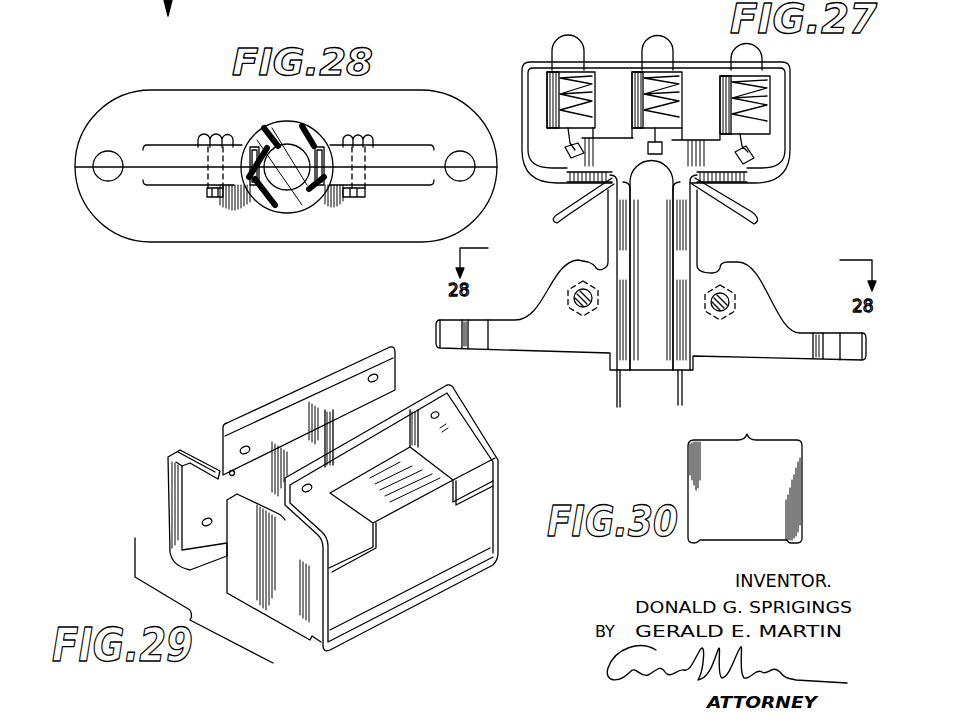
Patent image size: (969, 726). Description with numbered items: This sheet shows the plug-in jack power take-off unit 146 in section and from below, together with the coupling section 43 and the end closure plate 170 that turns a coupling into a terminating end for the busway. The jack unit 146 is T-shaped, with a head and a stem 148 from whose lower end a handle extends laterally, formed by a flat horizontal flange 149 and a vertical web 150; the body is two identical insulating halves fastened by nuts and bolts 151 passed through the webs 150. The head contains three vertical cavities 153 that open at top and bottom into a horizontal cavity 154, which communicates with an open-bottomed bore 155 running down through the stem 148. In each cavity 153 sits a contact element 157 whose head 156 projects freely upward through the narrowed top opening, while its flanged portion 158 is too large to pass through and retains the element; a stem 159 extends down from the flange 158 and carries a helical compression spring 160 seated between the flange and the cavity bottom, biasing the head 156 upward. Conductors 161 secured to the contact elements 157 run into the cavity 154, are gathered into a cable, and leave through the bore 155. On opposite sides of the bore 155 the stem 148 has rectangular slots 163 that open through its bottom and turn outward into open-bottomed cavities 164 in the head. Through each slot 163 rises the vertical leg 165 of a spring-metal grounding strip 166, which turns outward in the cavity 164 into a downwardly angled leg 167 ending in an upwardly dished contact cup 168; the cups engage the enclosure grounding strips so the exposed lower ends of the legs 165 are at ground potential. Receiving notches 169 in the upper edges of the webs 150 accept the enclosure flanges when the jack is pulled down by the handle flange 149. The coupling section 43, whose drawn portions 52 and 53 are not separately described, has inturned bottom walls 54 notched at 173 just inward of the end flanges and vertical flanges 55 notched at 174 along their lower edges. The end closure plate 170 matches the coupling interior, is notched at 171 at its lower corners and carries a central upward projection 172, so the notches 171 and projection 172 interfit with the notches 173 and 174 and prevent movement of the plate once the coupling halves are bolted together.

In FIG. 29, the enclosure coupling section 43 is at (245, 412).
In FIG. 29, the channel frame 52 is at (355, 607).
In FIG. 29, the shelf 53 is at (467, 453).
In FIG. 29, the inturned bottom walls 54 is at (213, 557).
In FIG. 29, the vertical flanges 55 is at (390, 372).
In FIG. 27, the plug-in jack unit 146 is at (840, 163).
In FIG. 28, the stem 148 is at (277, 200).
In FIG. 27, the stem 148 is at (693, 232).
In FIG. 28, the horizontal flange 149 is at (413, 113).
In FIG. 27, the horizontal flange 149 is at (773, 352).
In FIG. 28, the vertical web 150 is at (172, 157).
In FIG. 27, the vertical web 150 is at (750, 306).
In FIG. 28, the nuts and bolts 151 is at (210, 190).
In FIG. 27, the nuts and bolts 151 is at (580, 298).
In FIG. 27, the vertically extending cavities 153 is at (586, 96).
In FIG. 27, the horizontally extending cavity 154 is at (563, 155).
In FIG. 28, the bore 155 is at (278, 155).
In FIG. 27, the bore 155 is at (645, 362).
In FIG. 27, the heads 156 is at (653, 50).
In FIG. 27, the electrical contact elements 157 is at (806, 62).
In FIG. 27, the flanged portions 158 is at (552, 52).
In FIG. 27, the stems 159 is at (657, 93).
In FIG. 27, the helical compression springs 160 is at (753, 115).
In FIG. 27, the electrical conductors 161 is at (650, 150).
In FIG. 28, the rectangular slots 163 is at (254, 143).
In FIG. 27, the rectangular slots 163 is at (677, 250).
In FIG. 27, the open bottomed cavities 164 is at (735, 187).
In FIG. 28, the vertical leg 165 is at (323, 143).
In FIG. 27, the vertical leg 165 is at (616, 387).
In FIG. 27, the grounding strip 166 is at (616, 405).
In FIG. 27, the angled legs 167 is at (590, 192).
In FIG. 27, the contact cups 168 is at (757, 226).
In FIG. 27, the receiving notches 169 is at (598, 260).
In FIG. 29, the end closure plate 170 is at (297, 620).
In FIG. 30, the end closure plate 170 is at (800, 460).
In FIG. 30, the notches 171 is at (690, 541).
In FIG. 30, the projection 172 is at (747, 433).
In FIG. 29, the notches 173 is at (193, 548).
In FIG. 29, the notches 174 is at (235, 475).